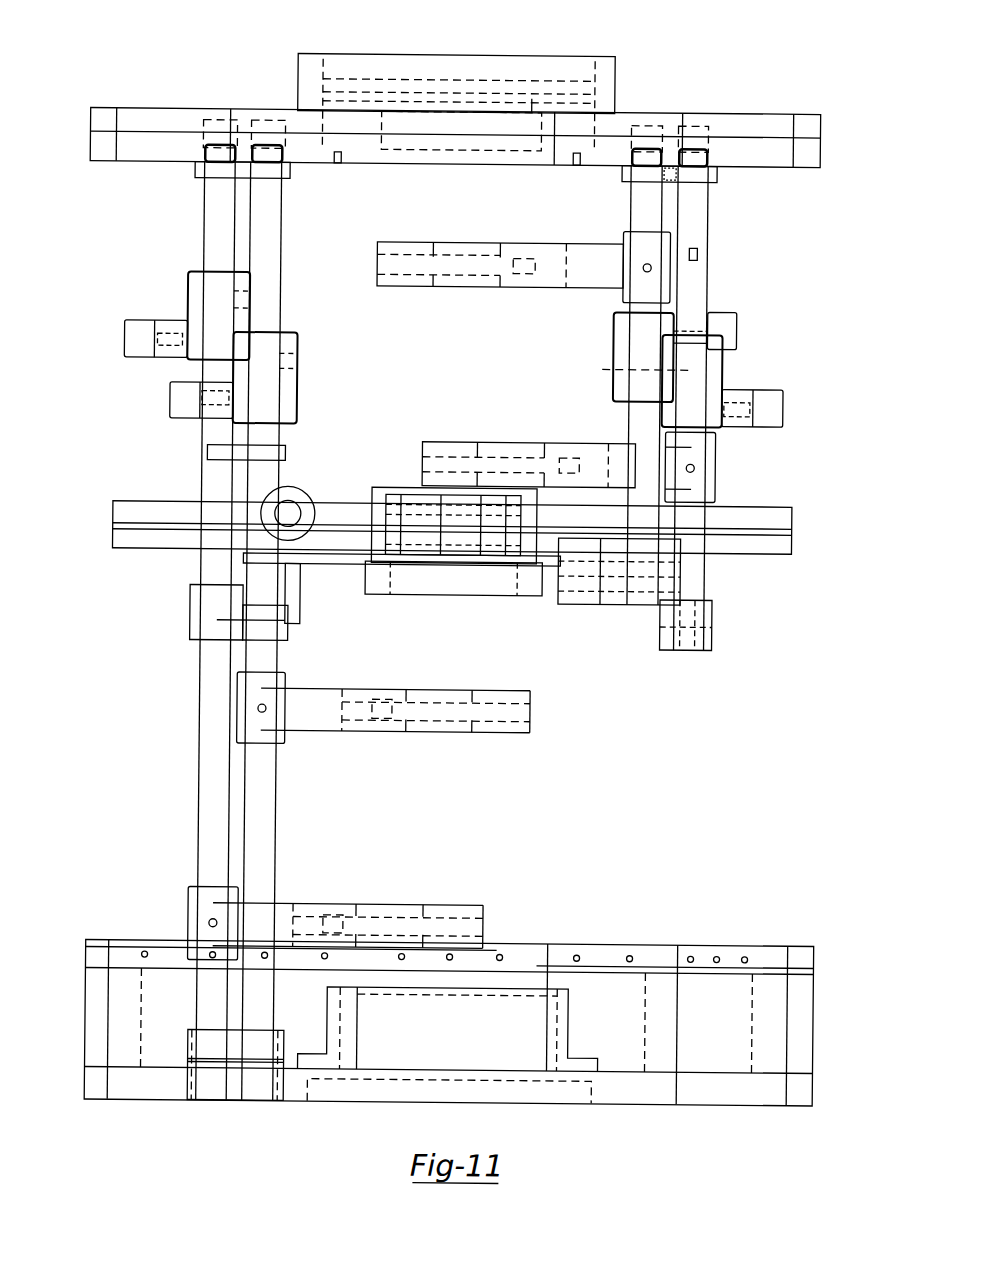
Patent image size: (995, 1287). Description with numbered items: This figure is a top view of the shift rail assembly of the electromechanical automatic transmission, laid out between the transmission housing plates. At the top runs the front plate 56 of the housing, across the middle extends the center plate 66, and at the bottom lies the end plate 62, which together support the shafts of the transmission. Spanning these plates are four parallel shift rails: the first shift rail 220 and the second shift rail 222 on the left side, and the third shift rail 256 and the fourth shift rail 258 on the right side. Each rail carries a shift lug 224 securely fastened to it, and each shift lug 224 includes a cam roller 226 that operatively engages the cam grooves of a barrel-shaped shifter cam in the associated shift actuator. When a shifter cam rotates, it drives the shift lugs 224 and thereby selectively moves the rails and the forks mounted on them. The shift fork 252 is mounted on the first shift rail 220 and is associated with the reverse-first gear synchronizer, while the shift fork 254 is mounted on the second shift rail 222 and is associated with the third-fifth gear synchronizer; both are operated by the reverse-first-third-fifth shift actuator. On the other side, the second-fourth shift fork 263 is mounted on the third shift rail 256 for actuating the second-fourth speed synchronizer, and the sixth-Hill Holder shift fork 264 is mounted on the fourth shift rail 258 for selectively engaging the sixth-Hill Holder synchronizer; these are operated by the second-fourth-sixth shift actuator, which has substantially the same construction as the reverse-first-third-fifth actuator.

The front plate 56 is at (760, 128).
The end plate 62 is at (717, 1090).
The center plate 66 is at (745, 515).
The first shift rail 220 is at (280, 219).
The second shift rail 222 is at (203, 186).
The shift lug 224 is at (188, 325).
The cam roller 226 is at (124, 343).
The shift fork 252 is at (355, 705).
The shift fork 254 is at (312, 915).
The third shift rail 256 is at (627, 180).
The fourth shift rail 258 is at (690, 193).
The 2-4 shift fork 263 is at (437, 262).
The sixth-Hill Holder shift fork 264 is at (444, 455).